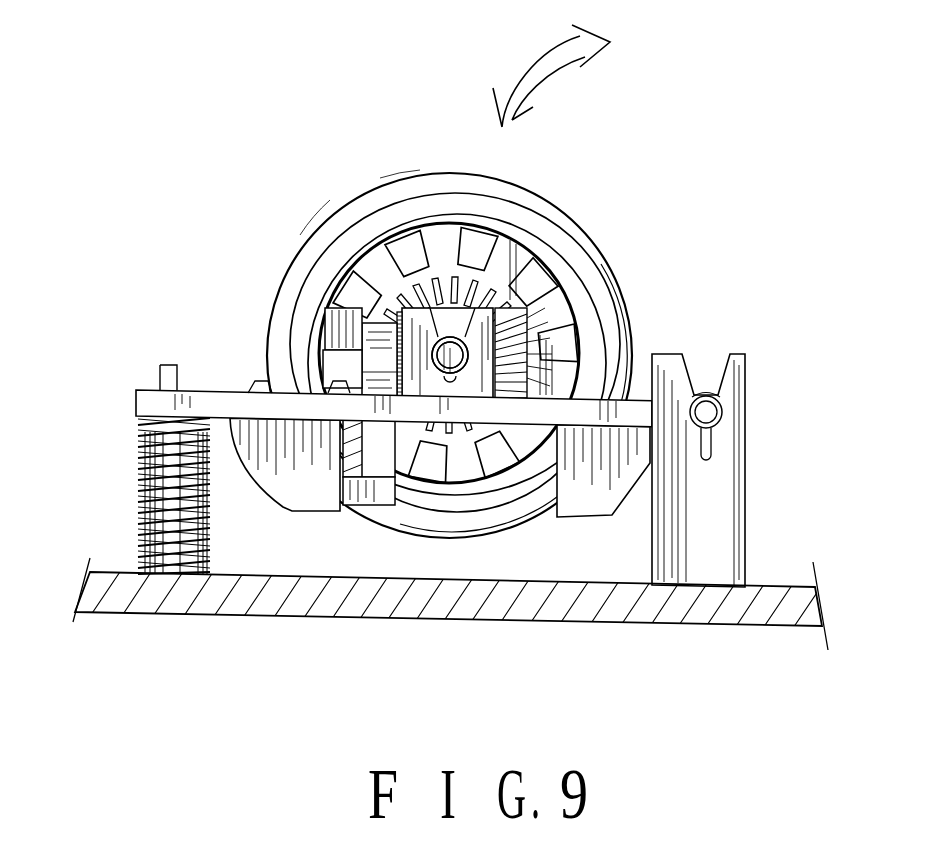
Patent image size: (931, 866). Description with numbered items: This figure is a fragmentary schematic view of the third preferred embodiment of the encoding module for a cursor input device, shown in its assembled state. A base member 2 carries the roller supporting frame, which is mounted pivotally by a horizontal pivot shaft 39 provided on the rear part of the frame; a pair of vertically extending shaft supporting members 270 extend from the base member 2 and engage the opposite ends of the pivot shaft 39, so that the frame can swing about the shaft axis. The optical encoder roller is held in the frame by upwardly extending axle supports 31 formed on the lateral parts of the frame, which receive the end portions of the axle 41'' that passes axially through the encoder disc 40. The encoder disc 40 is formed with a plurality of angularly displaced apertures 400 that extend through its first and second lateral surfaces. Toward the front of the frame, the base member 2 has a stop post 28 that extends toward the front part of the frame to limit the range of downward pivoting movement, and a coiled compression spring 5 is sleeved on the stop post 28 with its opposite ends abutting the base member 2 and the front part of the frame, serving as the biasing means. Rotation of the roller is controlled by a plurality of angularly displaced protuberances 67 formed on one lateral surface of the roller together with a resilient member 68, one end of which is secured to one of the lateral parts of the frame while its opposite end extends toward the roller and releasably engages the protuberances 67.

The encoder disc 40 is at (368, 270).
The apertures 400 is at (473, 240).
The protuberances 67 is at (508, 345).
The axle support 31 is at (478, 363).
The axle 41'' is at (333, 290).
The pivot shaft 39 is at (704, 392).
The shaft supporting members 270 is at (713, 506).
The coiled compression spring 5 is at (140, 497).
The stop post 28 is at (140, 520).
The base member 2 is at (260, 606).
The resilient member 68 is at (377, 462).